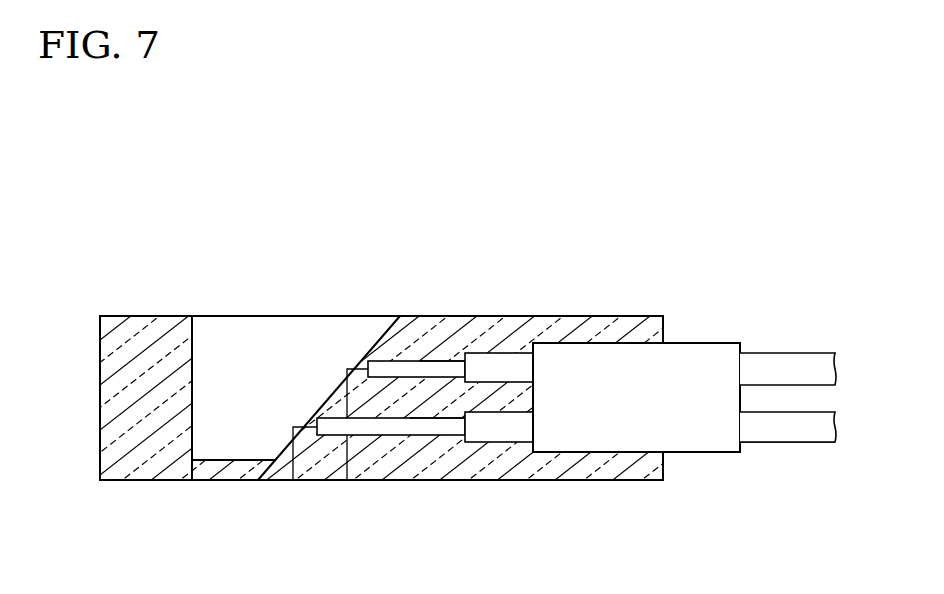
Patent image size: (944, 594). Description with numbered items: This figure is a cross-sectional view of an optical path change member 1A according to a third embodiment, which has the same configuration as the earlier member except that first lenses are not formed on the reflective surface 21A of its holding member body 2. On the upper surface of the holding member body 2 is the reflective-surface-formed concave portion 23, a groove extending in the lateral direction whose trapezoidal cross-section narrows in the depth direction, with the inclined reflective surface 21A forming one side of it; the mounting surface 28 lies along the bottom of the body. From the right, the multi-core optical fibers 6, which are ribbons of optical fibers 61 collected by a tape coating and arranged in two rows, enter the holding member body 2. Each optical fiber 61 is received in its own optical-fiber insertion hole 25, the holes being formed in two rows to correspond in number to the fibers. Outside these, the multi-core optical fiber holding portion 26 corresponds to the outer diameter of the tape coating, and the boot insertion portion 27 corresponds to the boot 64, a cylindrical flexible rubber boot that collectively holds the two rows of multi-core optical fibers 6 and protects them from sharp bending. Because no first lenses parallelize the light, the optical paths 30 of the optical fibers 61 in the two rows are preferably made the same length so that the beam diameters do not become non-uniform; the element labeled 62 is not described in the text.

The optical path change member 1A is at (141, 302).
The holding member body 2 is at (597, 316).
The reflective-surface-formed concave portion 23 is at (220, 338).
The reflective surface 21A is at (367, 343).
The mounting surface 28 is at (142, 480).
The optical path 30 is at (292, 447).
The optical-fiber insertion hole 25 is at (398, 360).
The multi-core optical fiber holding portion 26 is at (500, 355).
The wire connecting portion 62 is at (507, 370).
The optical fiber 61 is at (480, 522).
The boot 64 is at (683, 375).
The boot insertion portion 27 is at (621, 345).
The multi-core optical fiber 6 is at (789, 338).